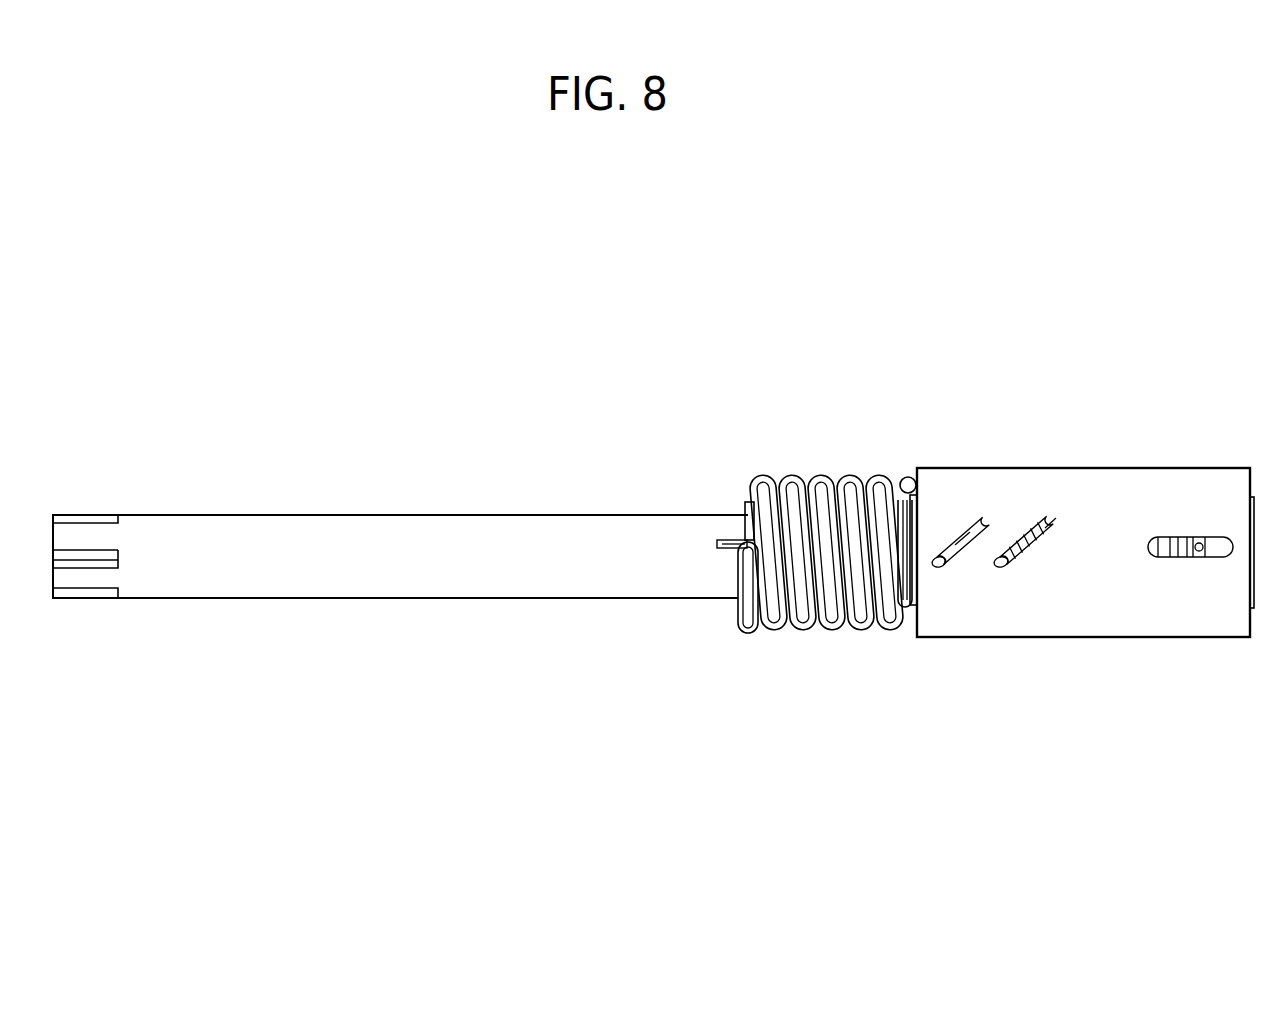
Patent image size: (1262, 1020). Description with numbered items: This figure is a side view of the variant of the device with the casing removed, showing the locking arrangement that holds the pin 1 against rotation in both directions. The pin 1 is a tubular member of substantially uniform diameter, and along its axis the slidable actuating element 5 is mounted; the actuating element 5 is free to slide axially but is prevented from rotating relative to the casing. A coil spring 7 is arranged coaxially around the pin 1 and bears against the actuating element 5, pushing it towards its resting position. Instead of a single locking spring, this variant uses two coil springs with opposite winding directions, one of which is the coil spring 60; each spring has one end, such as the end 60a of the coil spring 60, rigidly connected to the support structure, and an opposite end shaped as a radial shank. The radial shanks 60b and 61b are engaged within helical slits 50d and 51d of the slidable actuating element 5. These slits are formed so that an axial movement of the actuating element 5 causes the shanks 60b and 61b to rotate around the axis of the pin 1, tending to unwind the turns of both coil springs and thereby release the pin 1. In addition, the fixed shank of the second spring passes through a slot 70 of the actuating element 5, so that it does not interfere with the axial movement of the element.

The pin 1 is at (357, 504).
The actuating element 5 is at (1043, 461).
The coil spring 7 is at (757, 633).
The coil spring 60 is at (745, 500).
The end of coil spring 60a is at (722, 540).
The radial shank 60b is at (950, 568).
The radial shank 61b is at (1005, 567).
The helical slit 50d is at (962, 540).
The helical slit 51d is at (1057, 525).
The slot 70 is at (1220, 557).